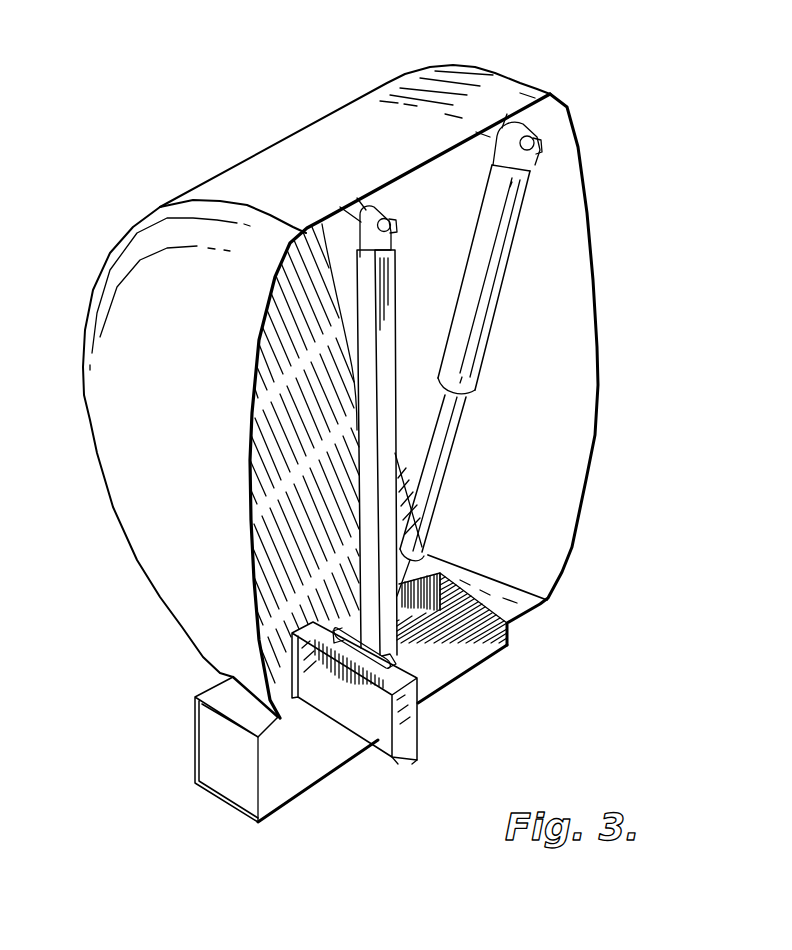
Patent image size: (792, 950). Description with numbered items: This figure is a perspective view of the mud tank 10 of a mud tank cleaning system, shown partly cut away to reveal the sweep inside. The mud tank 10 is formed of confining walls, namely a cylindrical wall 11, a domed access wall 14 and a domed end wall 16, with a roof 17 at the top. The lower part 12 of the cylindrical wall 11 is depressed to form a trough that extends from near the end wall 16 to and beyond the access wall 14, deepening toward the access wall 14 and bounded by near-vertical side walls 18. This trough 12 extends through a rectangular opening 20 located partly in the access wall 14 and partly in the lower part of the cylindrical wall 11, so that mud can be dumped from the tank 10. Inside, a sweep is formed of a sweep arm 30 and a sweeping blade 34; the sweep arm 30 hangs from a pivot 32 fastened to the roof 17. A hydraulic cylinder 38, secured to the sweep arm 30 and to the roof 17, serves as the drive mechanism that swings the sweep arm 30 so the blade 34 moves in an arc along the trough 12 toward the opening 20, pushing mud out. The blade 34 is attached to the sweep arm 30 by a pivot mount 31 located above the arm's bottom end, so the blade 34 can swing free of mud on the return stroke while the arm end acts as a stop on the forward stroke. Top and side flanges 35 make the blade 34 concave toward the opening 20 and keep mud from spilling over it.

The mud tank 10 is at (647, 291).
The cylindrical wall 11 is at (240, 162).
The lower part (trough) 12 is at (307, 792).
The domed access wall 14 is at (113, 508).
The domed end wall 16 is at (597, 345).
The roof 17 is at (507, 108).
The side walls 18 is at (195, 737).
The rectangular opening 20 is at (228, 740).
The sweep arm 30 is at (396, 287).
The pivot mount 31 is at (397, 660).
The pivot 32 is at (396, 225).
The sweeping blade 34 is at (417, 722).
The flanges 35 is at (400, 758).
The hydraulic cylinder 38 is at (486, 340).